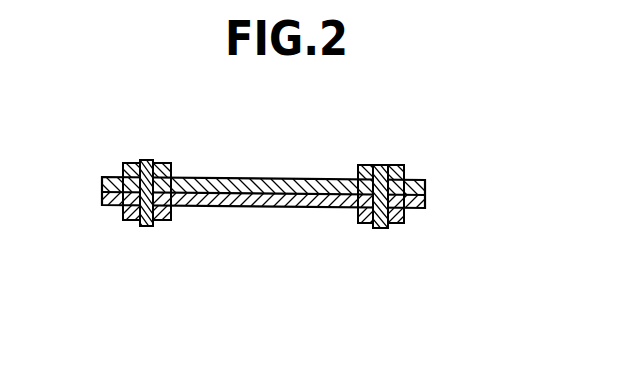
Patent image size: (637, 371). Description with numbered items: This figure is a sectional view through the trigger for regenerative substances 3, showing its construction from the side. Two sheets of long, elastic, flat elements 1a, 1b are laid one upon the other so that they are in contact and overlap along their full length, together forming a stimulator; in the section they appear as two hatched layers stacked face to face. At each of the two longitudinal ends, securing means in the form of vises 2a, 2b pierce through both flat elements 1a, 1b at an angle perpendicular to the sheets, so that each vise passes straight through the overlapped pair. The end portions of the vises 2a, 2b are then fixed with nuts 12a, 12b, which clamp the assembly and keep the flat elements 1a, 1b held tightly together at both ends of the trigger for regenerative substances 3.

The flat element 1a is at (238, 178).
The flat element 1b is at (287, 200).
The vise 2a is at (147, 162).
The vise 2b is at (385, 165).
The trigger for regenerative substances 3 is at (110, 208).
The nut 12a is at (165, 226).
The nut 12b is at (393, 228).